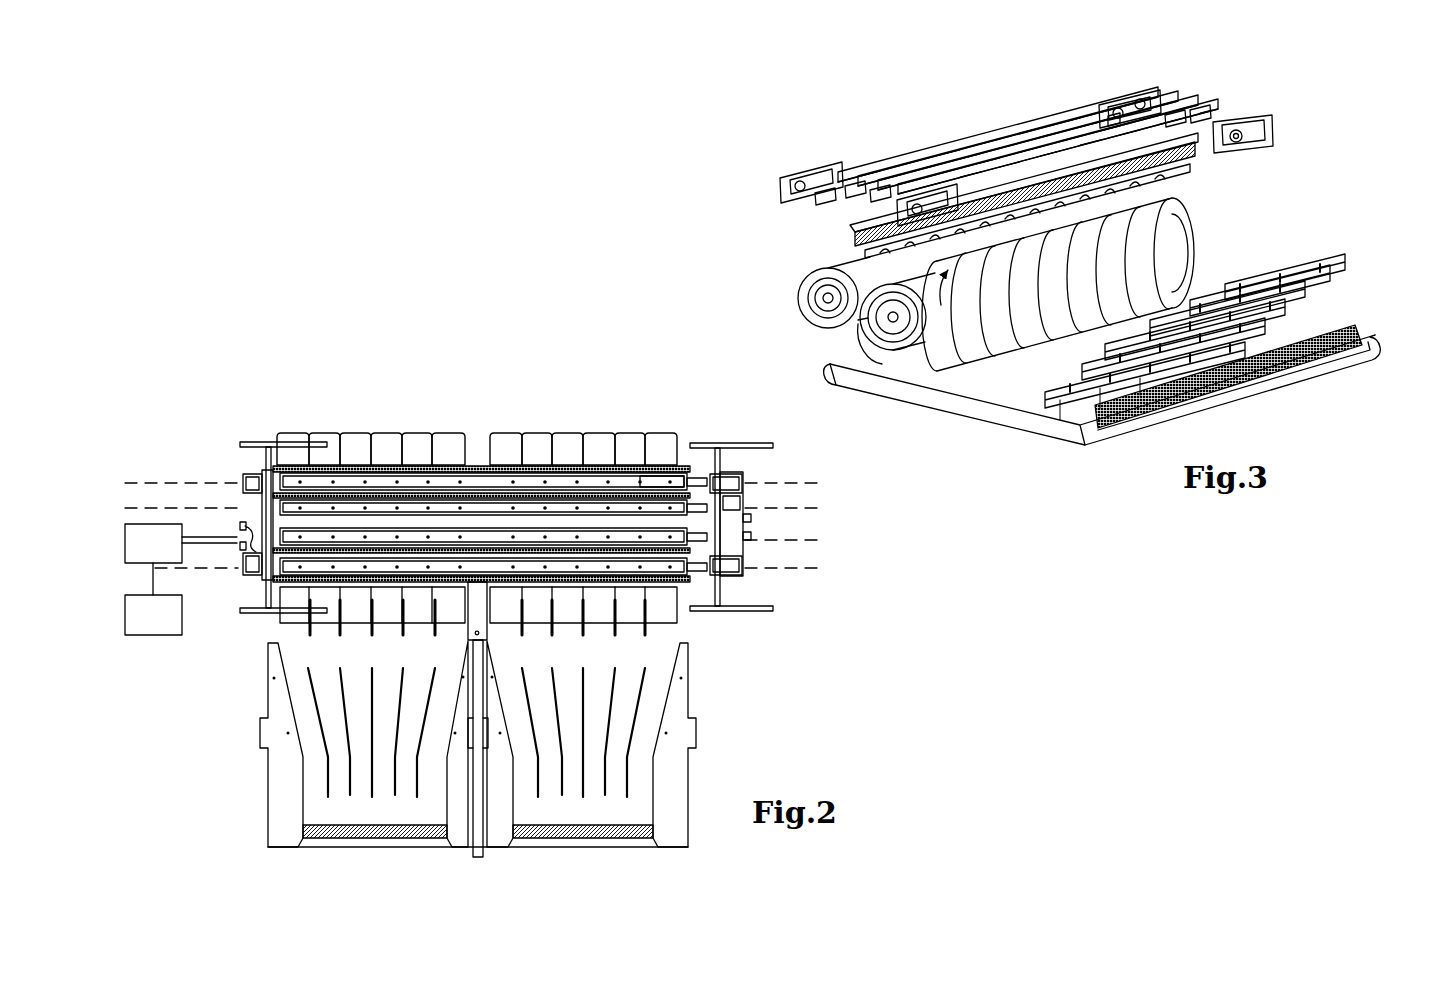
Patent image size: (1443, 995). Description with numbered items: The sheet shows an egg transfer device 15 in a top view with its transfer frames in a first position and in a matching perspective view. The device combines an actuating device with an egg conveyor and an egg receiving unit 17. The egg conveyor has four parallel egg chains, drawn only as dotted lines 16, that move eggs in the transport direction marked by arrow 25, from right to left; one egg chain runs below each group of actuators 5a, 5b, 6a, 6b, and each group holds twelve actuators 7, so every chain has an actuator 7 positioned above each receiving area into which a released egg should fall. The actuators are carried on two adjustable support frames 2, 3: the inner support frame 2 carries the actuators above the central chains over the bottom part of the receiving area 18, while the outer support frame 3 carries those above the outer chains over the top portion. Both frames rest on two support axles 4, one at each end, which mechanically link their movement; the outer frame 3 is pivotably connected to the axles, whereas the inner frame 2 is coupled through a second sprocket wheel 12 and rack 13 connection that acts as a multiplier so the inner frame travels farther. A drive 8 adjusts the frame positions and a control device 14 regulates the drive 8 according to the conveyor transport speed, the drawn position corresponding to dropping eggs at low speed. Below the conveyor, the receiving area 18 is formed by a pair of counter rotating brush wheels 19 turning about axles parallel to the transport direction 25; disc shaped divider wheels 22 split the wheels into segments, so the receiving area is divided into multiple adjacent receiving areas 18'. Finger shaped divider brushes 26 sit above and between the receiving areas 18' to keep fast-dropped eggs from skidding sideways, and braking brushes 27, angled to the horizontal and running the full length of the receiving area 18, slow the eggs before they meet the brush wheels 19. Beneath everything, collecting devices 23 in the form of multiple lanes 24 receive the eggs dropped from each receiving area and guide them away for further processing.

In FIG. 2, the support frame 2 is at (697, 525).
In FIG. 2, the support frame 3 is at (737, 502).
In FIG. 2, the support axle 4 is at (712, 493).
In FIG. 3, the support axle 4 is at (1127, 113).
In FIG. 2, the group of actuators 5a is at (488, 537).
In FIG. 2, the group of actuators 5b is at (527, 510).
In FIG. 2, the group of actuators 6a is at (658, 483).
In FIG. 2, the group of actuators 6b is at (593, 567).
In FIG. 2, the actuator 7 is at (460, 483).
In FIG. 3, the actuator 7 is at (1028, 140).
In FIG. 2, the drive 8 is at (124, 540).
In FIG. 3, the second sprocket wheel 12 is at (1199, 108).
In FIG. 3, the rack 13 is at (816, 210).
In FIG. 2, the control device 14 is at (182, 612).
In FIG. 2, the egg transfer device 15 is at (504, 293).
In FIG. 3, the egg transfer device 15 is at (911, 91).
In FIG. 2, the dotted lines (egg chains) 16 is at (195, 482).
In FIG. 3, the egg receiving unit 17 is at (1320, 260).
In FIG. 3, the receiving area 18 is at (784, 288).
In FIG. 3, the receiving area section 18' is at (1144, 337).
In FIG. 3, the brush wheel 19 is at (806, 313).
In FIG. 3, the disc shaped divider wheel 22 is at (1194, 263).
In FIG. 2, the collecting device 23 is at (714, 648).
In FIG. 3, the collecting device 23 is at (1292, 296).
In FIG. 2, the lane 24 is at (652, 712).
In FIG. 2, the transport direction 25 is at (828, 518).
In FIG. 3, the finger shaped divider brush 26 is at (1197, 185).
In FIG. 3, the braking brush 27 is at (1207, 172).